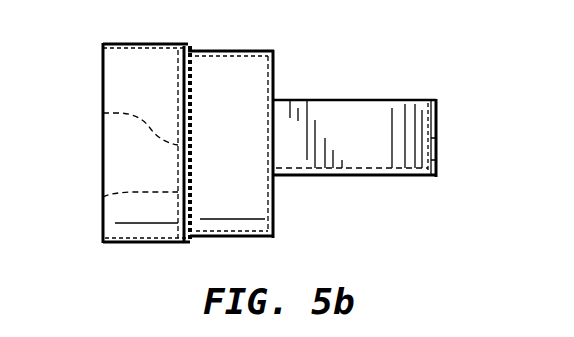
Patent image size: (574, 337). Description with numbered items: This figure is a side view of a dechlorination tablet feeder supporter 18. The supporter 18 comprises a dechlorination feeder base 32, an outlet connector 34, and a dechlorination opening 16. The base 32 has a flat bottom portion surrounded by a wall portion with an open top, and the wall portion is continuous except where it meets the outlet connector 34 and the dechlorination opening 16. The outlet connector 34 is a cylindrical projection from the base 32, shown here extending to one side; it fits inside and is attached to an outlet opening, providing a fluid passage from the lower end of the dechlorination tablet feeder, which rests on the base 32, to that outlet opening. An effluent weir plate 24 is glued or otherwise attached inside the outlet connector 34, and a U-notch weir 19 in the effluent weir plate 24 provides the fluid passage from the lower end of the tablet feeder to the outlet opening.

The dechlorination opening 16 is at (430, 148).
The dechlorination tablet feeder supporter 18 is at (269, 52).
The U-notch weir 19 is at (104, 113).
The effluent weir plate 24 is at (104, 197).
The dechlorination feeder base 32 is at (369, 148).
The outlet connector 34 is at (237, 78).